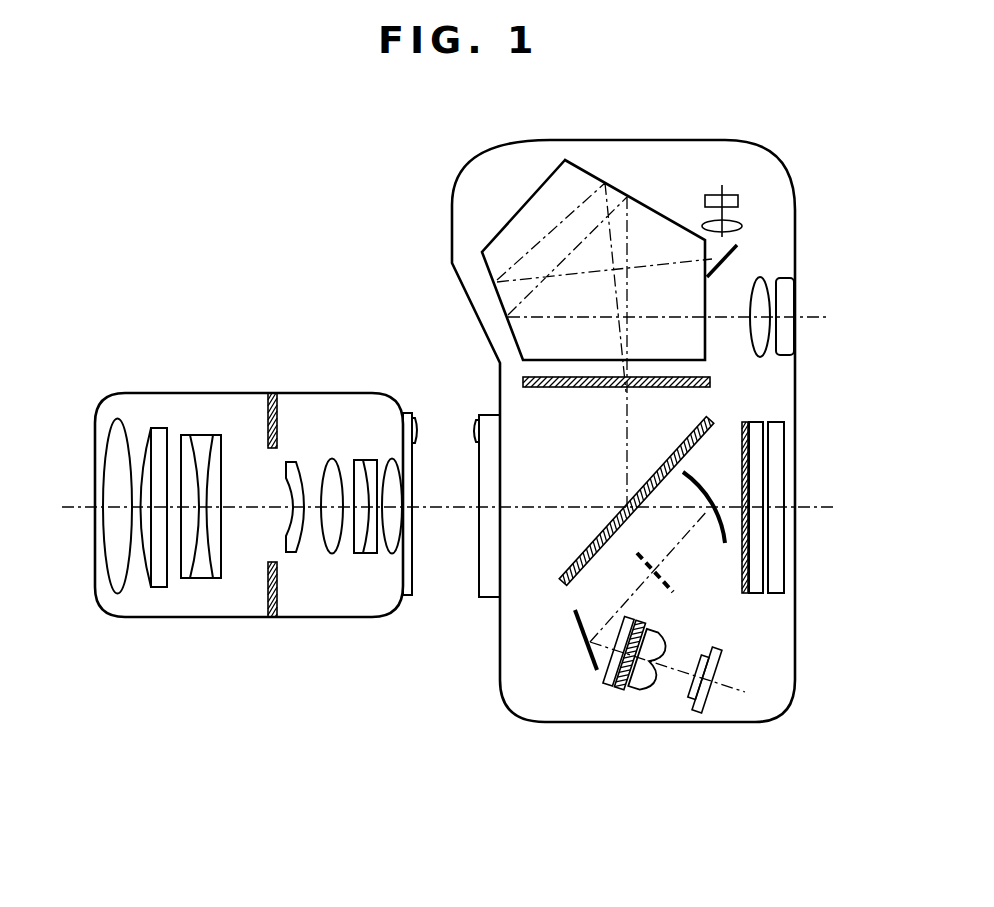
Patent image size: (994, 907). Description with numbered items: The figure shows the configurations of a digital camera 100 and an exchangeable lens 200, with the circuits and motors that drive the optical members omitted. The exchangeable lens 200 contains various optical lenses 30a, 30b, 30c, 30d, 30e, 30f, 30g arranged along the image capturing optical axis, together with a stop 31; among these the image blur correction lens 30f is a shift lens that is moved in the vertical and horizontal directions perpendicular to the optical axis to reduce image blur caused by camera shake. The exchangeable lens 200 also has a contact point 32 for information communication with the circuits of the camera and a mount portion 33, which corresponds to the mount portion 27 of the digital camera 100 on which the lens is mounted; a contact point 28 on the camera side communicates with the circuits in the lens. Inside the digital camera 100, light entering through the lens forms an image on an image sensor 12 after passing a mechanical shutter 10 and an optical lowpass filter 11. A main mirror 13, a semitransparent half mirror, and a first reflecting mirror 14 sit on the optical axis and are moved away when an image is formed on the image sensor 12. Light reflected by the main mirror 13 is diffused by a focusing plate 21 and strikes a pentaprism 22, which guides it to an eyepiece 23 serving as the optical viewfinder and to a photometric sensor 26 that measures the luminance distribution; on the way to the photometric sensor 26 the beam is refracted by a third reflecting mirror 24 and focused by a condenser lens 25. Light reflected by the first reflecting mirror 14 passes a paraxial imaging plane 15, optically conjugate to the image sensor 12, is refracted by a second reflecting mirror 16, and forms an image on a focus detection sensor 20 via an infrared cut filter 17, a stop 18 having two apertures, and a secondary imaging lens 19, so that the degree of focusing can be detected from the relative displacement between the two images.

The digital camera 100 is at (452, 224).
The exchangeable lens 200 is at (170, 393).
The optical lens 30a is at (112, 590).
The optical lens 30b is at (158, 587).
The optical lens 30c is at (213, 578).
The optical lens 30d is at (293, 553).
The optical lens 30e is at (330, 553).
The image blur correction lens 30f is at (368, 553).
The optical lens 30g is at (393, 553).
The stop 31 is at (272, 397).
The contact point 32 is at (415, 420).
The mount portion 33 is at (412, 588).
The mount portion 27 is at (485, 597).
The contact point 28 is at (476, 420).
The pentaprism 22 is at (518, 212).
The focusing plate 21 is at (537, 388).
The eyepiece 23 is at (795, 300).
The third reflecting mirror 24 is at (740, 255).
The condenser lens 25 is at (745, 226).
The photometric sensor 26 is at (710, 195).
The main mirror 13 is at (682, 440).
The first reflecting mirror 14 is at (712, 482).
The paraxial imaging plane 15 is at (650, 556).
The second reflecting mirror 16 is at (576, 622).
The infrared cut filter 17 is at (607, 687).
The stop 18 is at (628, 693).
The secondary imaging lens 19 is at (650, 693).
The focus detection sensor 20 is at (718, 648).
The mechanical shutter 10 is at (745, 421).
The optical lowpass filter 11 is at (757, 530).
The image sensor 12 is at (780, 572).